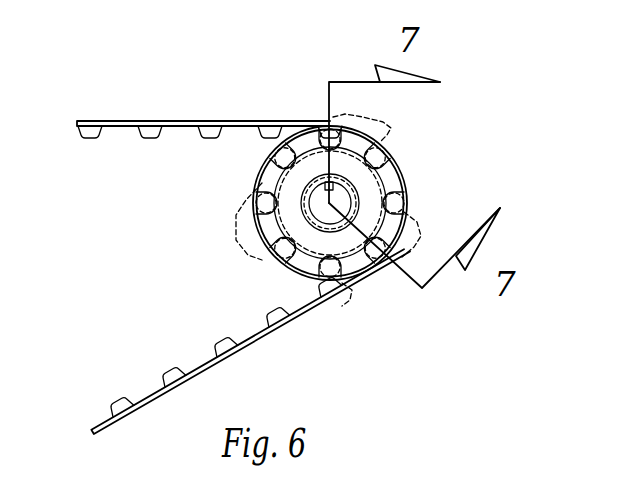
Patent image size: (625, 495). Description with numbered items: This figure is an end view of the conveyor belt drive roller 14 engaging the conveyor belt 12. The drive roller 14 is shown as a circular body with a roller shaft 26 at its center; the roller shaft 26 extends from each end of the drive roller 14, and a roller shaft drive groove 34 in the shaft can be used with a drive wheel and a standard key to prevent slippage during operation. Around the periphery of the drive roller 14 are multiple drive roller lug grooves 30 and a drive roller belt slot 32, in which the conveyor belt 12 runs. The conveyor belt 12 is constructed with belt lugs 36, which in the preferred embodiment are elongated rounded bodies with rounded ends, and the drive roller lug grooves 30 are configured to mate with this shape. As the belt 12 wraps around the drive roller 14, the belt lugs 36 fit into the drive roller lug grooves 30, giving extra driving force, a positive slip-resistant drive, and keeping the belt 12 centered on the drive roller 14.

The conveyor belt 12 is at (115, 121).
The drive roller 14 is at (259, 174).
The roller shaft 26 is at (342, 203).
The drive roller lug grooves 30 is at (268, 143).
The drive roller belt slot 32 is at (258, 185).
The roller shaft drive groove 34 is at (338, 192).
The belt lugs 36 is at (210, 139).